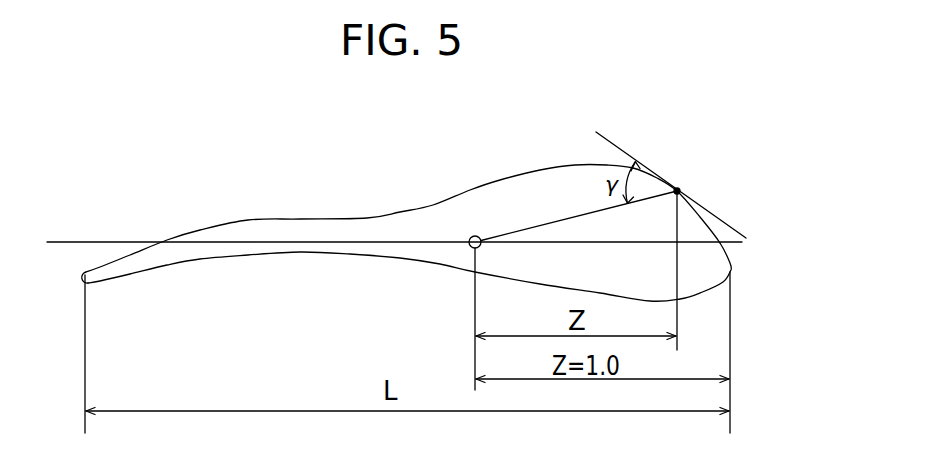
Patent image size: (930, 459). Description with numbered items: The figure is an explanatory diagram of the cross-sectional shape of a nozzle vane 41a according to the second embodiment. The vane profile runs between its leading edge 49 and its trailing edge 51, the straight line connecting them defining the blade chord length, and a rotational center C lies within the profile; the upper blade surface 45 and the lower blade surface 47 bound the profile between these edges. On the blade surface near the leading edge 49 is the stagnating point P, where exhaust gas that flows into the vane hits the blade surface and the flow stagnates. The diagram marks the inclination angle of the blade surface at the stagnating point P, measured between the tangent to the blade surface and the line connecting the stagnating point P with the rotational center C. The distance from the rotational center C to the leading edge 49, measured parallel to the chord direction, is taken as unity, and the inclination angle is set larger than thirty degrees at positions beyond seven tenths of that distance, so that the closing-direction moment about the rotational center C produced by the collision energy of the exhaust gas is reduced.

The nozzle vane 41a is at (400, 234).
The suction surface (upper surface) 45 is at (257, 220).
The pressure surface (lower surface) 47 is at (285, 253).
The leading edge 49 is at (732, 268).
The trailing edge 51 is at (84, 277).
The rotational center C is at (480, 247).
The stagnating point P is at (688, 184).